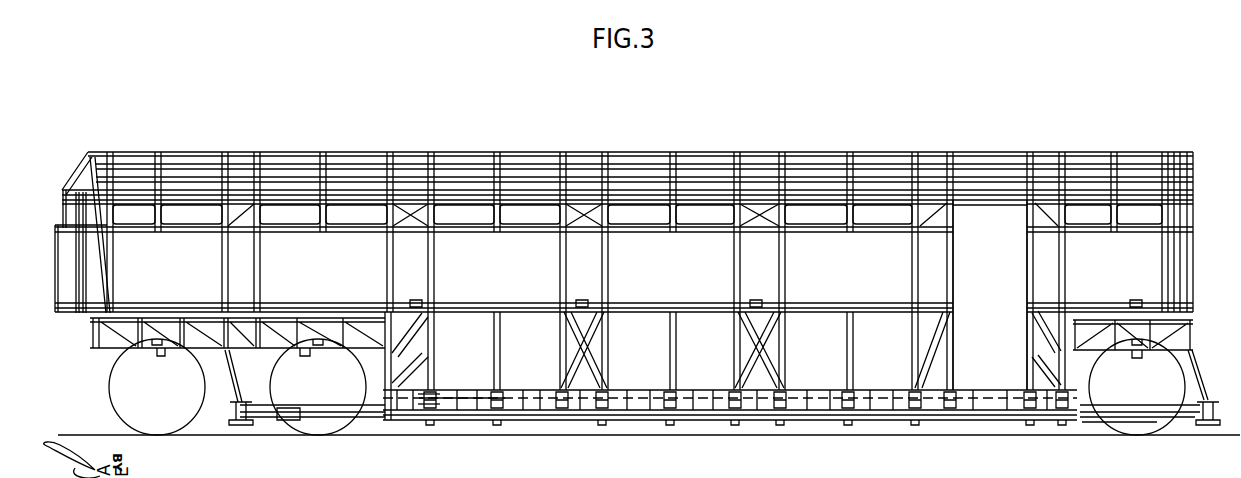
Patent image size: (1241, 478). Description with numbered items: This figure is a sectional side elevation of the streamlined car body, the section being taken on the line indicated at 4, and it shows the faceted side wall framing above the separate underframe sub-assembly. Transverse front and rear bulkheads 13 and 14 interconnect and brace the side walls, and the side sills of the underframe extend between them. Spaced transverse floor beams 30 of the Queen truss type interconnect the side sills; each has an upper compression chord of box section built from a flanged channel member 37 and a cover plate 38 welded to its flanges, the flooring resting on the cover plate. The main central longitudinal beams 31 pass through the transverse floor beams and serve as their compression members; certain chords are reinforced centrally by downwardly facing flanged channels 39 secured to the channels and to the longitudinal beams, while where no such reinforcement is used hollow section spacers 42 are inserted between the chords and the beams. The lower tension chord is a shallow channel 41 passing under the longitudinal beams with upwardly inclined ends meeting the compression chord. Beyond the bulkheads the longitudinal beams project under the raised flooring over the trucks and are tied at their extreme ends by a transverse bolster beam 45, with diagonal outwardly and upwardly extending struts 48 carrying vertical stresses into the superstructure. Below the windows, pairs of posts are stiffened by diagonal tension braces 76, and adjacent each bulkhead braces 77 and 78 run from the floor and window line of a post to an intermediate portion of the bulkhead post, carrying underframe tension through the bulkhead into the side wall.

The section line reference 4 is at (1115, 290).
The front bulkhead 13 is at (1066, 265).
The rear bulkhead 14 is at (399, 232).
The transverse floor beam 30 is at (600, 410).
The main central longitudinal beam 31 is at (320, 419).
The flanged channel member 37 is at (500, 395).
The cover plate 38 is at (423, 403).
The downwardly facing flanged channel 39 is at (427, 403).
The shallow channel 41 is at (431, 426).
The hollow section spacer 42 is at (497, 412).
The transverse bolster beam 45 is at (232, 418).
The diagonal strut 48 is at (235, 380).
The diagonal brace 76 is at (578, 330).
The floor brace 77 is at (400, 363).
The window line brace 78 is at (413, 333).